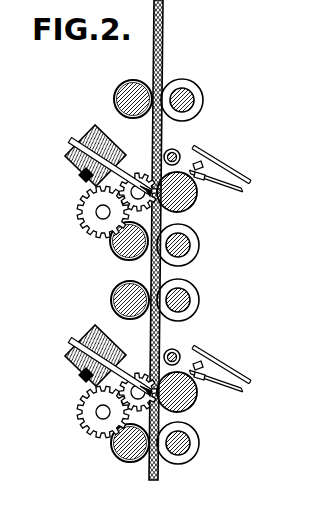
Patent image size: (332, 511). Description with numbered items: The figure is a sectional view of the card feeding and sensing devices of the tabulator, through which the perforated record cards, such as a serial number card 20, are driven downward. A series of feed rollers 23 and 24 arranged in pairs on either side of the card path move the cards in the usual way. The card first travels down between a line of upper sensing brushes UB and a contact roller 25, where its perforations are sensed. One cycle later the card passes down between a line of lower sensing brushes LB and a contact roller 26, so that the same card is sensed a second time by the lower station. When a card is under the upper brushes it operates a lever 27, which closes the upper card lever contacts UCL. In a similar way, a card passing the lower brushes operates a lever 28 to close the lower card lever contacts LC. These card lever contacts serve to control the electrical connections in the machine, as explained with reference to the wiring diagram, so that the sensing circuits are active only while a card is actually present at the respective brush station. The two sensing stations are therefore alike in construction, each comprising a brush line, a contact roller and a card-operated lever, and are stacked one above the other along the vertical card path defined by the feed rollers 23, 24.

The serial number card 20 is at (163, 52).
The feed rollers 23 is at (116, 90).
The feed rollers 24 is at (197, 88).
The contact roller 25 is at (196, 206).
The contact roller 26 is at (196, 406).
The lever 27 is at (180, 152).
The lever 28 is at (179, 353).
The upper sensing brushes UB is at (149, 172).
The lower sensing brushes LB is at (149, 372).
The upper card lever contacts UCL is at (205, 162).
The lower card lever contacts LC is at (210, 366).